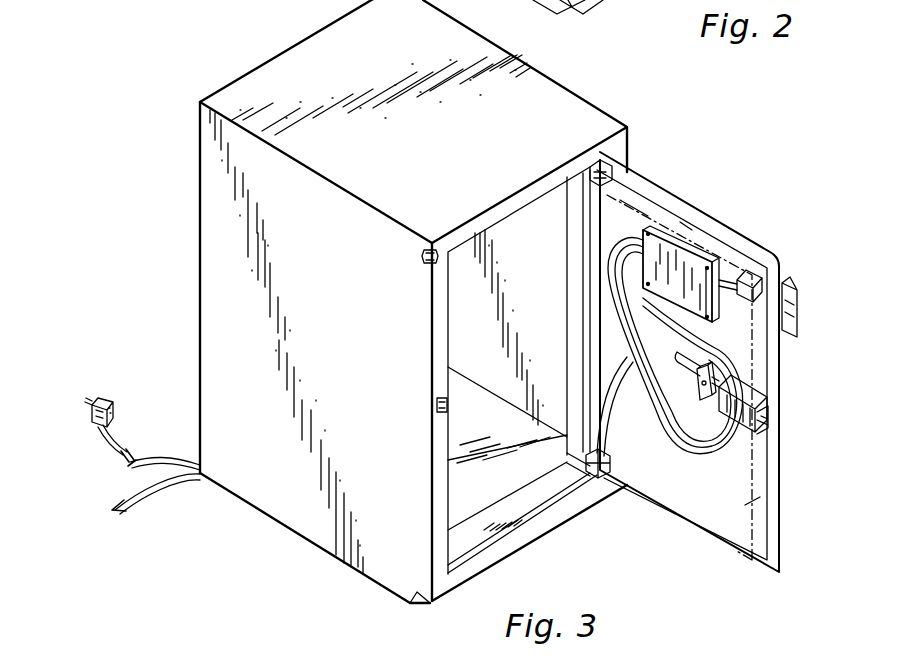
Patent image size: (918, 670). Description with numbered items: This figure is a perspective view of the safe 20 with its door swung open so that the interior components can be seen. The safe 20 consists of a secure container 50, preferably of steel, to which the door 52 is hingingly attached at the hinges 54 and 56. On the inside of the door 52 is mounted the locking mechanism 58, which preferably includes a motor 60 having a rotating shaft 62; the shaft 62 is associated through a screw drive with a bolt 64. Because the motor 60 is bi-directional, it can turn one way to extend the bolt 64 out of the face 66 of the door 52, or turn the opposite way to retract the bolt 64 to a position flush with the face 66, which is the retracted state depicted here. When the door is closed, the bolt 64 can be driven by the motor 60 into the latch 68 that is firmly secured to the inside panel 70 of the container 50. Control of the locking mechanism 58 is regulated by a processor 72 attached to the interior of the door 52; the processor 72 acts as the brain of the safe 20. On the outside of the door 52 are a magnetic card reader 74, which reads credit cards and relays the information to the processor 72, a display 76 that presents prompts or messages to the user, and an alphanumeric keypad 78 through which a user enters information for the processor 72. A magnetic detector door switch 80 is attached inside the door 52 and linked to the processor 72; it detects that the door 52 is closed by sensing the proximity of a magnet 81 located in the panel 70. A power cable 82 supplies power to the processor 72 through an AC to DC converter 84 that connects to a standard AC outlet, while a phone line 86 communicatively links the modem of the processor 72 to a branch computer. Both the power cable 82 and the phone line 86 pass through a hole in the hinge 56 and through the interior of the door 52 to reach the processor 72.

The safe 20 is at (262, 46).
The secure container 50 is at (586, 100).
The door 52 is at (742, 250).
The hinge 54 is at (610, 158).
The hinge 56 is at (598, 478).
The locking mechanism 58 is at (760, 403).
The motor 60 is at (690, 360).
The rotating shaft 62 is at (716, 380).
The bolt 64 is at (769, 424).
The face 66 is at (760, 497).
The latch 68 is at (437, 405).
The inside panel 70 is at (450, 310).
The processor 72 is at (692, 250).
The magnetic card reader 74 is at (797, 328).
The light-emitting diode display 76 is at (680, 222).
The alphanumeric keypad 78 is at (648, 195).
The magnetic detector door switch 80 is at (761, 277).
The magnet 81 is at (421, 256).
The power cable 82 is at (158, 457).
The AC to DC converter 84 is at (108, 405).
The phone line 86 is at (150, 483).